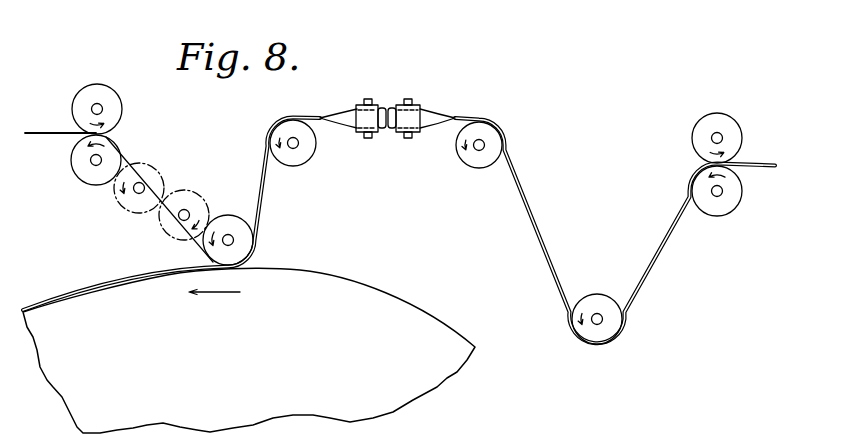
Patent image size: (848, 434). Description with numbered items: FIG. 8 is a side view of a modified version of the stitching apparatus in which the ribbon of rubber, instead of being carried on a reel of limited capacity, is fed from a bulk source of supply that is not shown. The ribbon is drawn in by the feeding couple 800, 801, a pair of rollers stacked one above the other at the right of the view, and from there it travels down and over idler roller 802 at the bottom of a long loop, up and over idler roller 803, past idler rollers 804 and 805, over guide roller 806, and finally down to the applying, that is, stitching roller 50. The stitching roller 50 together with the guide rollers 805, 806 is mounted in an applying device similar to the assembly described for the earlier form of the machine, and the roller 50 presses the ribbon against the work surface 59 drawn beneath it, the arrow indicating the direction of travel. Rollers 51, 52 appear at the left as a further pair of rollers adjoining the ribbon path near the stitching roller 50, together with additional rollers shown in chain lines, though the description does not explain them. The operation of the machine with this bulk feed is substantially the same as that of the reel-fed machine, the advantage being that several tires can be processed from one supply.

The stitching roller 50 is at (231, 219).
The roller 51 is at (81, 97).
The roller 52 is at (76, 159).
The lamination surface 59 is at (249, 350).
The feeding couple 800 is at (702, 128).
The feeding couple 801 is at (715, 210).
The idler roller 802 is at (598, 300).
The idler roller 803 is at (474, 160).
The idler roller 804 is at (419, 113).
The guide roller 805 is at (357, 116).
The guide roller 806 is at (291, 158).